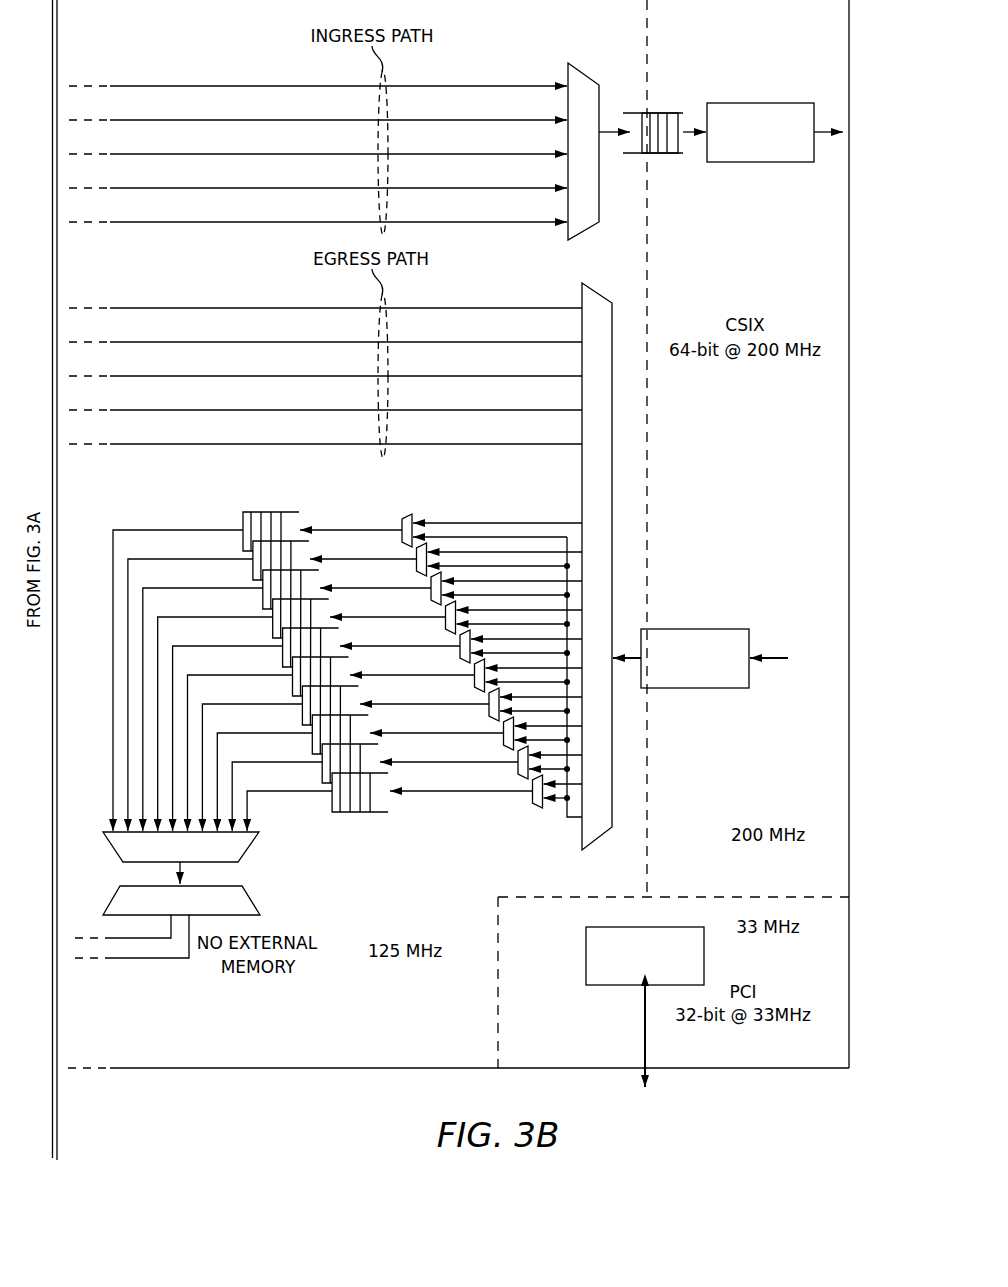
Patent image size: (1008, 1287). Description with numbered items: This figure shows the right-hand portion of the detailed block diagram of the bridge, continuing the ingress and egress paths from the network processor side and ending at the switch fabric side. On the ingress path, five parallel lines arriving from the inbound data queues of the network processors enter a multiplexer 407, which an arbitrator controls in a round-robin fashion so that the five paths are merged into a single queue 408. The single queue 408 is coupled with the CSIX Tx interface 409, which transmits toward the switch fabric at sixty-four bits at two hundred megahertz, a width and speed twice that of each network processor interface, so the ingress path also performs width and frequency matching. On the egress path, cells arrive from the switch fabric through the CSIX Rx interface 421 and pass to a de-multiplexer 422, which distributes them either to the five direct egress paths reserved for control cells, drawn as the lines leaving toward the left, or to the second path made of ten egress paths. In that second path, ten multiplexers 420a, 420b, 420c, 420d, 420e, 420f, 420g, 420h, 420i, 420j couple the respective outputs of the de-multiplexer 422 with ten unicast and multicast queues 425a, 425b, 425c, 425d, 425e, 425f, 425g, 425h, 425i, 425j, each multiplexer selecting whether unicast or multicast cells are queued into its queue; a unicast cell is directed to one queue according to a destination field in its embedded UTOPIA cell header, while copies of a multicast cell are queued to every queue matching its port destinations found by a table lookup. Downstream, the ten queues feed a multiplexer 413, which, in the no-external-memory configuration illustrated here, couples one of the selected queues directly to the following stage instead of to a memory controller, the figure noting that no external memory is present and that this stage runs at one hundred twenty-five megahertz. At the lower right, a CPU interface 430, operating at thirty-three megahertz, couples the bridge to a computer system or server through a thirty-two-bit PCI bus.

The multiplexer 407 is at (582, 68).
The single queue 408 is at (668, 113).
The CSIX Tx interface 409 is at (765, 103).
The multiplexer 413 is at (250, 848).
The multiplexer 420a is at (401, 538).
The multiplexer 420b is at (416, 567).
The multiplexer 420c is at (430, 596).
The multiplexer 420d is at (444, 625).
The multiplexer 420e is at (459, 654).
The multiplexer 420f is at (474, 683).
The multiplexer 420g is at (488, 712).
The multiplexer 420h is at (502, 741).
The multiplexer 420i is at (517, 770).
The multiplexer 420j is at (532, 799).
The CSIX Rx interface 421 is at (697, 629).
The de-multiplexer 422 is at (600, 851).
The unicast and multicast queue 425a is at (242, 540).
The unicast and multicast queue 425b is at (252, 569).
The unicast and multicast queue 425c is at (262, 598).
The unicast and multicast queue 425d is at (272, 627).
The unicast and multicast queue 425e is at (282, 656).
The unicast and multicast queue 425f is at (292, 685).
The unicast and multicast queue 425g is at (301, 714).
The unicast and multicast queue 425h is at (311, 743).
The unicast and multicast queue 425i is at (321, 772).
The unicast and multicast queue 425j is at (331, 801).
The CPU interface 430 is at (586, 956).